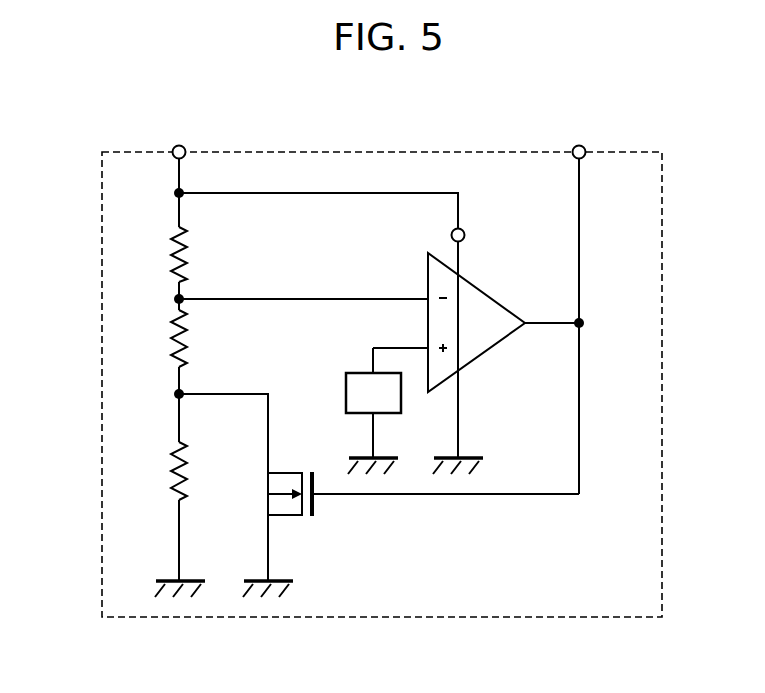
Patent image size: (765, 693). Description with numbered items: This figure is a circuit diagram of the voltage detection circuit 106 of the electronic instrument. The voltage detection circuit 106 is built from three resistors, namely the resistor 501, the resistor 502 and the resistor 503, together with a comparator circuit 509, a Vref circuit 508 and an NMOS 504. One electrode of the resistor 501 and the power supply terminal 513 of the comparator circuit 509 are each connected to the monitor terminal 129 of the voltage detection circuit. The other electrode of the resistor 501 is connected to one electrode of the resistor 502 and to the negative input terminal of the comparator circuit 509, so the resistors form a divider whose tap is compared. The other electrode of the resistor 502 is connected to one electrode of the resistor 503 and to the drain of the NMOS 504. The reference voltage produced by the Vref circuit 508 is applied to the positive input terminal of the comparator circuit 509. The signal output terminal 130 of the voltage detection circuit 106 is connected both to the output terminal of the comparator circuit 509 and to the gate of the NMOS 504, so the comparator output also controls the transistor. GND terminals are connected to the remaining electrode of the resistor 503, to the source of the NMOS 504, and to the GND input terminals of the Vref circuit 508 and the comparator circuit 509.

The voltage detection circuit 106 is at (368, 150).
The monitor terminal 129 is at (179, 145).
The signal output terminal 130 is at (579, 145).
The resistor 501 is at (193, 250).
The resistor 502 is at (193, 336).
The resistor 503 is at (191, 481).
The NMOS 504 is at (318, 511).
The Vref circuit 508 is at (345, 381).
The comparator circuit 509 is at (427, 271).
The power supply terminal 513 is at (466, 235).